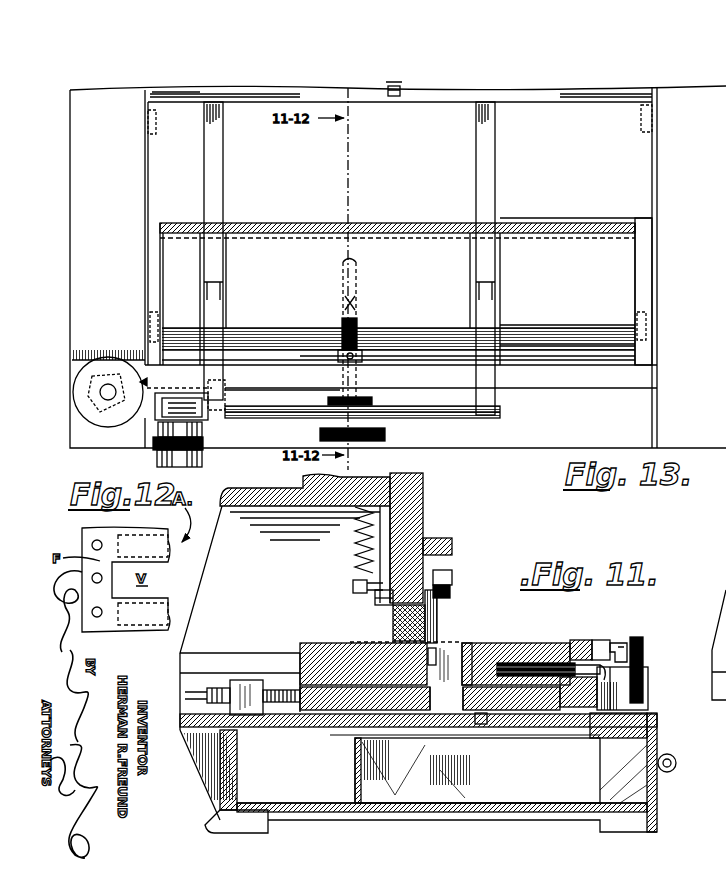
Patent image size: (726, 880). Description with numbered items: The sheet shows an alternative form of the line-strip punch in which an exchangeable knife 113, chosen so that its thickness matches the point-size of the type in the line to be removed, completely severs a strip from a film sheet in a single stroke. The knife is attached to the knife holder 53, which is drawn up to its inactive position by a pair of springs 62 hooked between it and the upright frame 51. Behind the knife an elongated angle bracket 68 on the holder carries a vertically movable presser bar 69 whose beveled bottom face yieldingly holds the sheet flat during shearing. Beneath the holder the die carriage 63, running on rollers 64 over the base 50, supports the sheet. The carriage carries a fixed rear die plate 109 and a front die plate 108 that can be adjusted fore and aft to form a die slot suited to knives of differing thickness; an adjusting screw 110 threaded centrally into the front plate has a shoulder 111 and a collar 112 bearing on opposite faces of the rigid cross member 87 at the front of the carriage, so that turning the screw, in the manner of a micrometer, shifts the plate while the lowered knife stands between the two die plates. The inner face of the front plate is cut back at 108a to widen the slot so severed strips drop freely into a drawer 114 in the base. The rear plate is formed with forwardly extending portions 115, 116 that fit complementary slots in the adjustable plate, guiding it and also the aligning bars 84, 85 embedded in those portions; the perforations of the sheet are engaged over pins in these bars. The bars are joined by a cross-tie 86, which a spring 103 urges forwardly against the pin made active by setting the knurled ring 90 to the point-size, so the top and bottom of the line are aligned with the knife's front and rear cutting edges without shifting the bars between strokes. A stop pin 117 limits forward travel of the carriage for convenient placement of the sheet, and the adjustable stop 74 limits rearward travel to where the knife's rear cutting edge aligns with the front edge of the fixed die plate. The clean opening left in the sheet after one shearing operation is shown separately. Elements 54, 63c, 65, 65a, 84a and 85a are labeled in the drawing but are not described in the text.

In FIG. 13, the base 50 is at (522, 440).
In FIG. 11, the base 50 is at (198, 783).
In FIG. 11, the upright frame 51 is at (262, 490).
In FIG. 11, the knife holder 53 is at (422, 520).
In FIG. 11, the stop member 54 is at (452, 571).
In FIG. 11, the springs 62 is at (352, 540).
In FIG. 13, the die carriage 63 is at (136, 227).
In FIG. 11, the die carriage 63 is at (494, 642).
In FIG. 11, the carriage portion 63c is at (340, 718).
In FIG. 13, the roller 64 is at (158, 130).
In FIG. 11, the roller 64 is at (312, 740).
In FIG. 11, the tray 65 is at (410, 732).
In FIG. 11, the tray flange 65a is at (580, 732).
In FIG. 11, the angle bracket 68 is at (385, 606).
In FIG. 11, the presser bar 69 is at (393, 630).
In FIG. 13, the adjustable stop 74 is at (385, 98).
In FIG. 11, the adjustable stop 74 is at (282, 680).
In FIG. 13, the aligning bar 84 is at (214, 172).
In FIG. 13, the left post foot 84a is at (222, 230).
In FIG. 13, the aligning bar 85 is at (488, 170).
In FIG. 11, the aligning bar 85 is at (602, 640).
In FIG. 13, the right post foot 85a is at (489, 230).
In FIG. 13, the cross-tie 86 is at (452, 418).
In FIG. 11, the cross-tie 86 is at (620, 645).
In FIG. 11, the cross member 87 is at (583, 642).
In FIG. 13, the knurled ring 90 is at (153, 453).
In FIG. 13, the spring 103 is at (226, 398).
In FIG. 13, the front die plate 108 is at (612, 320).
In FIG. 11, the front die plate 108 is at (520, 655).
In FIG. 11, the cut back 108a is at (460, 686).
In FIG. 13, the rear die plate 109 is at (640, 176).
In FIG. 11, the rear die plate 109 is at (312, 650).
In FIG. 13, the adjusting screw 110 is at (386, 433).
In FIG. 11, the adjusting screw 110 is at (645, 637).
In FIG. 13, the shoulder 111 is at (372, 396).
In FIG. 11, the shoulder 111 is at (603, 678).
In FIG. 13, the collar 112 is at (365, 360).
In FIG. 11, the collar 112 is at (562, 650).
In FIG. 13, the knife 113 is at (336, 222).
In FIG. 11, the knife 113 is at (437, 608).
In FIG. 11, the drawer 114 is at (658, 742).
In FIG. 13, the forwardly extending portion 115 is at (498, 273).
In FIG. 13, the forwardly extending portion 116 is at (226, 275).
In FIG. 11, the stop pin 117 is at (483, 726).